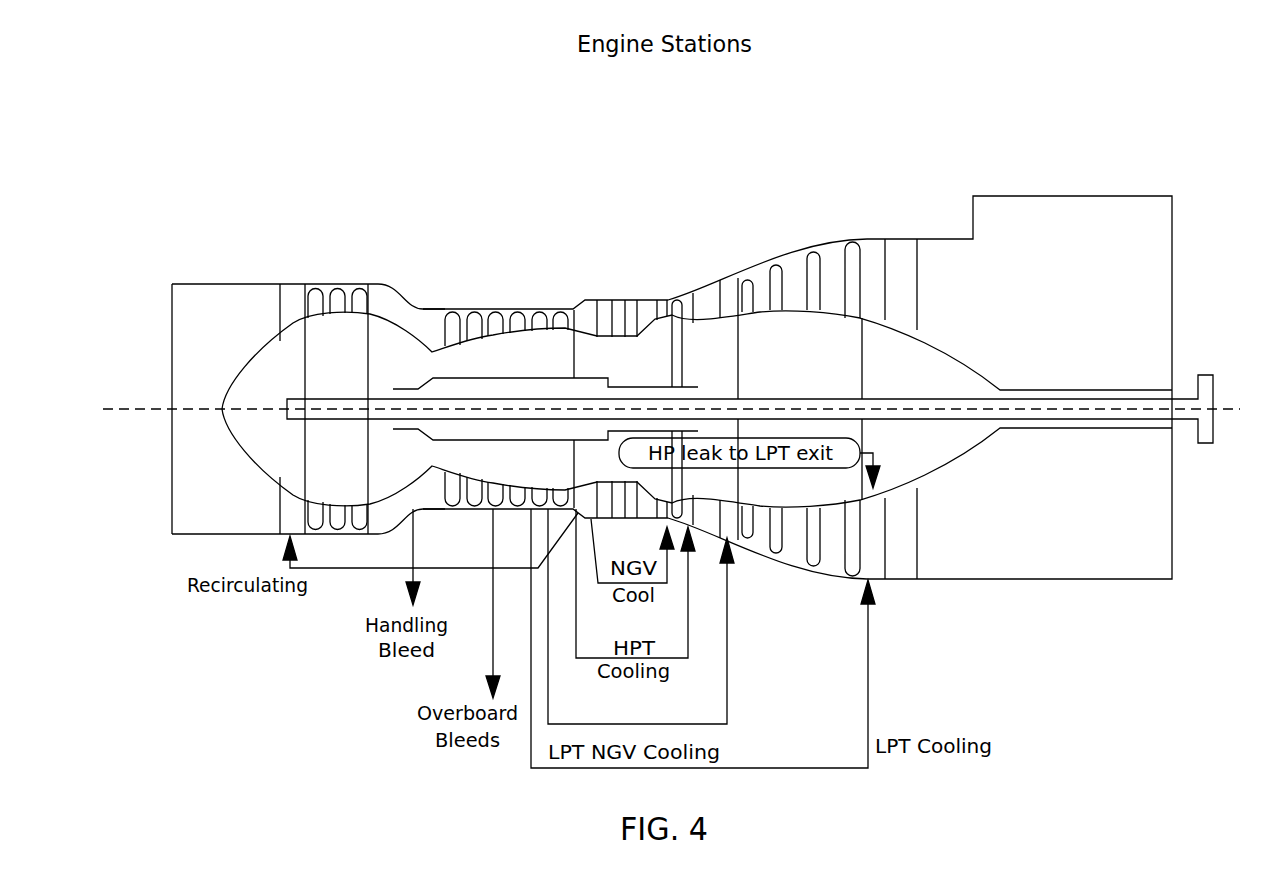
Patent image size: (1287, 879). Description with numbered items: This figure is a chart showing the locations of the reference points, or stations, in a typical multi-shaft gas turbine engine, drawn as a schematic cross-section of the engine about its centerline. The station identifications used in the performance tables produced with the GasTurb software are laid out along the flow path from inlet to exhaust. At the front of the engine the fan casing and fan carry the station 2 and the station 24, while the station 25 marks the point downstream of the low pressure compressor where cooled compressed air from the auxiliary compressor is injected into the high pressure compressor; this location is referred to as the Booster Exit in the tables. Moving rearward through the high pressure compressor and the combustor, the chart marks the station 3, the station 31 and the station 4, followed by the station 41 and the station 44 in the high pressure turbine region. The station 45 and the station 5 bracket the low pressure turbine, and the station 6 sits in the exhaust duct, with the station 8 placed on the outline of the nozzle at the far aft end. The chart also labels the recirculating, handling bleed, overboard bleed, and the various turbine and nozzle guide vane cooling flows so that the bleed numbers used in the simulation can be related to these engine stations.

The engine station 2 is at (262, 284).
The engine station 24 is at (370, 284).
The Booster Exit station 25 is at (432, 322).
The engine station 3 is at (578, 302).
The engine station 31 is at (590, 313).
The engine station 4 is at (648, 312).
The engine station 41 is at (668, 310).
The engine station 44 is at (687, 312).
The engine station 45 is at (735, 293).
The engine station 5 is at (872, 283).
The engine station 6 is at (927, 292).
The engine station 8 is at (1019, 292).